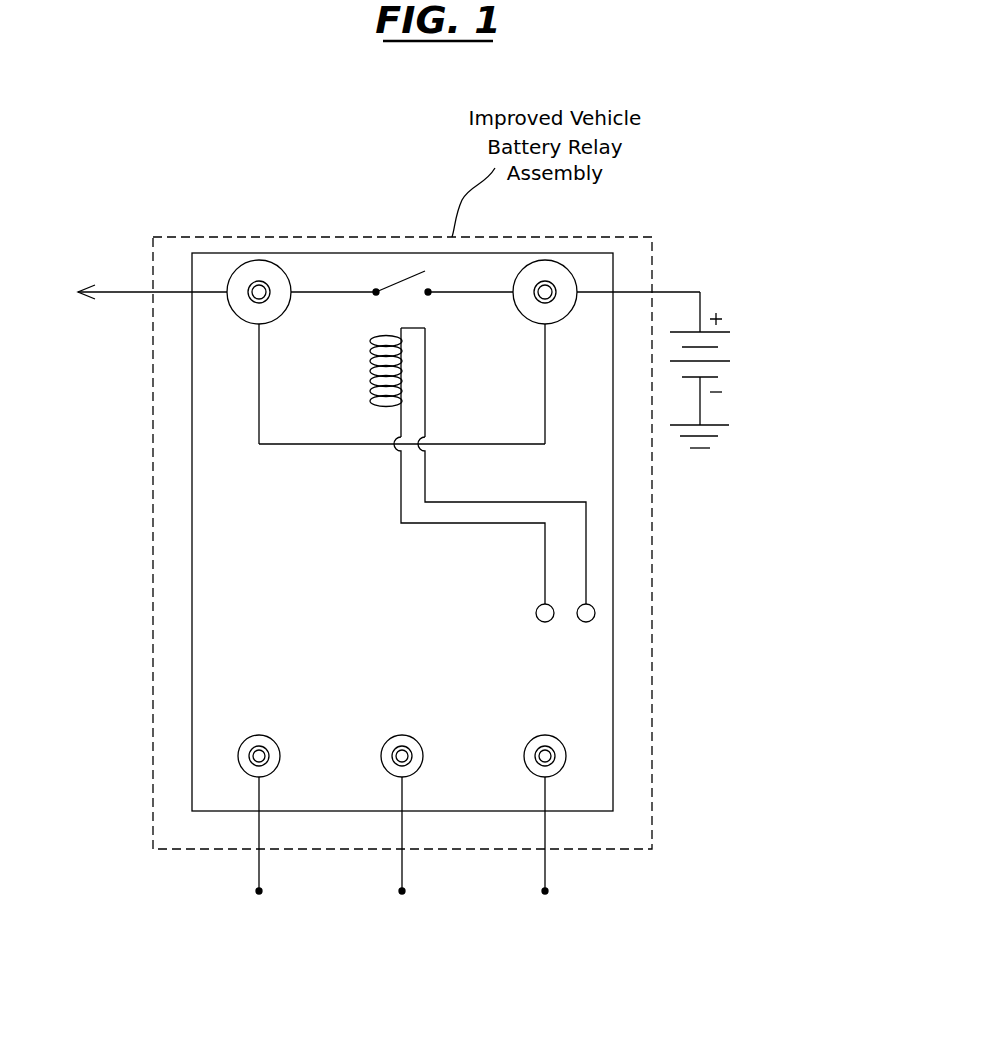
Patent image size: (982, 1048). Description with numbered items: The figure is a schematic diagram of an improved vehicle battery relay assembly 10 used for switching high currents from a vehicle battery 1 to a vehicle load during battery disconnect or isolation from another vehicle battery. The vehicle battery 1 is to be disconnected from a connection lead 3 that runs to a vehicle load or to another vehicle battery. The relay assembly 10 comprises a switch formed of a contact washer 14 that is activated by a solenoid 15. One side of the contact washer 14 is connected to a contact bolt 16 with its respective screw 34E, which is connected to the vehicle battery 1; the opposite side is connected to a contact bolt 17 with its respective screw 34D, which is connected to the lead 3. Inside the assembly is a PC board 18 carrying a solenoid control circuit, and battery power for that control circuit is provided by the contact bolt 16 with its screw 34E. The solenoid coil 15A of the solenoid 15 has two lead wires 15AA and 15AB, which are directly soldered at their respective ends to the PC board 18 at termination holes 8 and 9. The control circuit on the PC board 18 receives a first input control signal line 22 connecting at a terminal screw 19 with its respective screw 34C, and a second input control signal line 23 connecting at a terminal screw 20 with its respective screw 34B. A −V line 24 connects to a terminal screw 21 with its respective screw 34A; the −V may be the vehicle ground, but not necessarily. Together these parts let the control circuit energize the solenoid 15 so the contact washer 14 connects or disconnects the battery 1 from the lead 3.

The vehicle battery 1 is at (726, 285).
The connection lead 3 is at (113, 289).
The termination hole 8 is at (586, 622).
The termination hole 9 is at (537, 619).
The improved vehicle battery relay assembly 10 is at (313, 238).
The contact washer 14 is at (402, 277).
The solenoid 15 is at (367, 388).
The solenoid coil 15A is at (378, 408).
The lead wire 15AA is at (447, 501).
The lead wire 15AB is at (437, 523).
The contact bolt 16 is at (560, 308).
The contact bolt 17 is at (238, 313).
The PC board 18 is at (192, 567).
The terminal screw 19 is at (565, 755).
The terminal screw 20 is at (417, 738).
The terminal screw 21 is at (272, 740).
The input control signal line 1 22 is at (547, 862).
The input control signal line 2 23 is at (404, 862).
The −V line 24 is at (261, 832).
The screw 34A is at (257, 750).
The screw 34B is at (398, 750).
The screw 34C is at (537, 762).
The screw 34D is at (262, 283).
The screw 34E is at (538, 302).